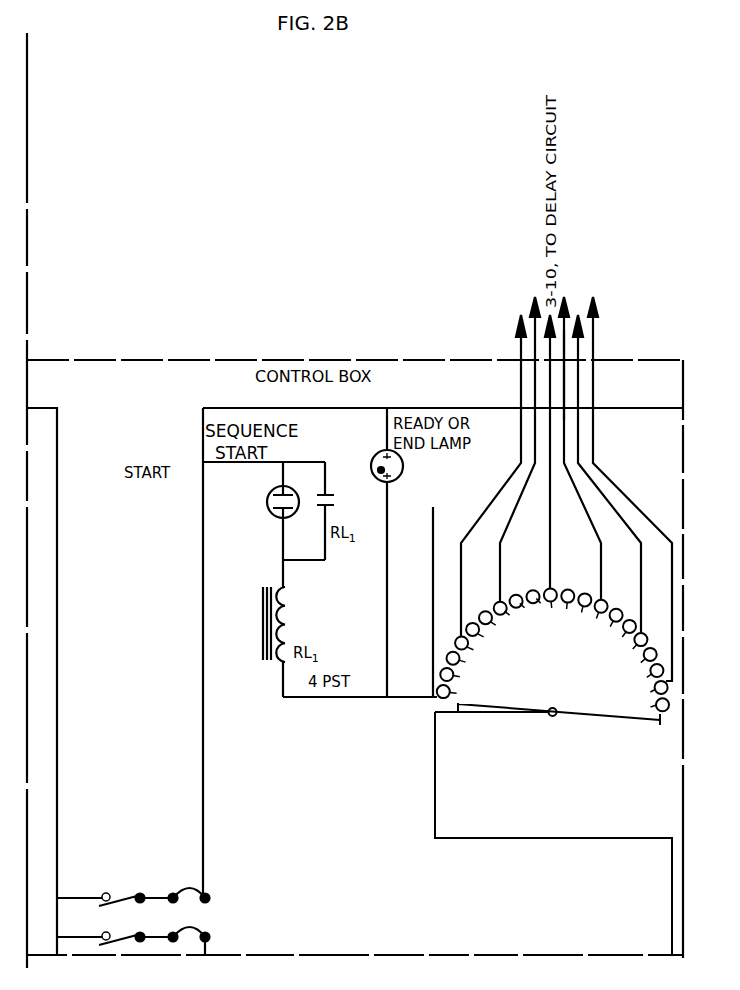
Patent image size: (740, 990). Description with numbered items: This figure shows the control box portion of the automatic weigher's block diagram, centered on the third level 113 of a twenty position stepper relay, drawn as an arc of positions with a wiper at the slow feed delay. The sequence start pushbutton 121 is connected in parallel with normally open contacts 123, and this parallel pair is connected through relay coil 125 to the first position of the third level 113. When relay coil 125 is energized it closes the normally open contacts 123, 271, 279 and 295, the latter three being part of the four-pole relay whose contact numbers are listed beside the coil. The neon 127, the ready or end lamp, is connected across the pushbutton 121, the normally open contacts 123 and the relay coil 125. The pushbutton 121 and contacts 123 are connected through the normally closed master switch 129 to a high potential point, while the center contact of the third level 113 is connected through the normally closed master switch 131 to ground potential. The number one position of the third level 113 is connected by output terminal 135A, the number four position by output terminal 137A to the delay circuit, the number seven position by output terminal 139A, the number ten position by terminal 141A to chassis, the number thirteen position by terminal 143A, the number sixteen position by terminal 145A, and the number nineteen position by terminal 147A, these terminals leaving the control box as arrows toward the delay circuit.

The third level of stepper relay 113 is at (552, 772).
The sequence start pushbutton 121 is at (272, 503).
The normally open contacts 123 is at (332, 500).
The relay coil 125 is at (289, 620).
The neon 127 is at (403, 467).
The normally closed master switch 129 is at (125, 892).
The normally closed master switch 131 is at (118, 939).
The output terminal 135A is at (422, 602).
The output terminal 137A is at (495, 427).
The output terminal 139A is at (522, 402).
The terminal 141A is at (579, 331).
The terminal 143A is at (565, 315).
The terminal 145A is at (606, 423).
The terminal 147A is at (629, 442).
The normally open contacts 271 is at (299, 728).
The normally open contacts 279 is at (324, 743).
The normally open contacts 295 is at (349, 759).